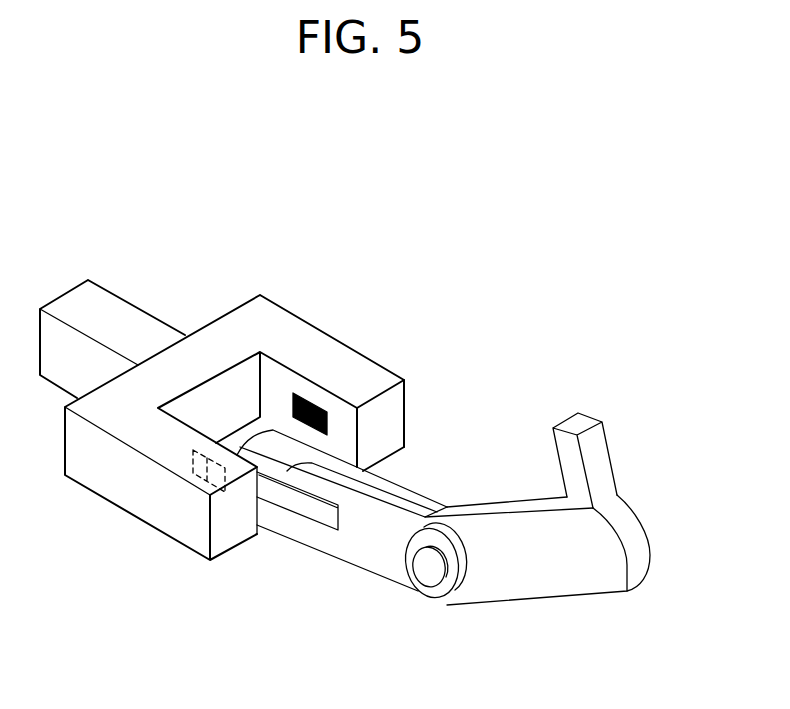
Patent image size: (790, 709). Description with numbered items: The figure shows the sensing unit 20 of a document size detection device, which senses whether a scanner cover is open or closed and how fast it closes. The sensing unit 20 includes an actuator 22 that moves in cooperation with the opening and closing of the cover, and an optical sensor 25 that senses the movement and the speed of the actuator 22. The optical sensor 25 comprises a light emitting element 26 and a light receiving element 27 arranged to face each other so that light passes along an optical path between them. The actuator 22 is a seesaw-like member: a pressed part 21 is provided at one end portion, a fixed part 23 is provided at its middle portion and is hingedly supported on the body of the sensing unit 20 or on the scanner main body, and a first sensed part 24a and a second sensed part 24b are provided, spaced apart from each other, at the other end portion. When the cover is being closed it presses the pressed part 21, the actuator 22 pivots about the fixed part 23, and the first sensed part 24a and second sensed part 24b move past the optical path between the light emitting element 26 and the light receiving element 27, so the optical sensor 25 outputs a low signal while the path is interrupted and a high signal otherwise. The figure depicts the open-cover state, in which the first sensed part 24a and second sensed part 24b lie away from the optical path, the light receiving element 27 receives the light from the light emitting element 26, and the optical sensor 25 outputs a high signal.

The sensing unit 20 is at (386, 248).
The pressed part 21 is at (600, 457).
The actuator 22 is at (350, 547).
The fixed part 23 is at (427, 570).
The first sensed part 24a is at (400, 483).
The second sensed part 24b is at (283, 525).
The optical sensor 25 is at (221, 318).
The light emitting element 26 is at (310, 400).
The light receiving element 27 is at (207, 472).